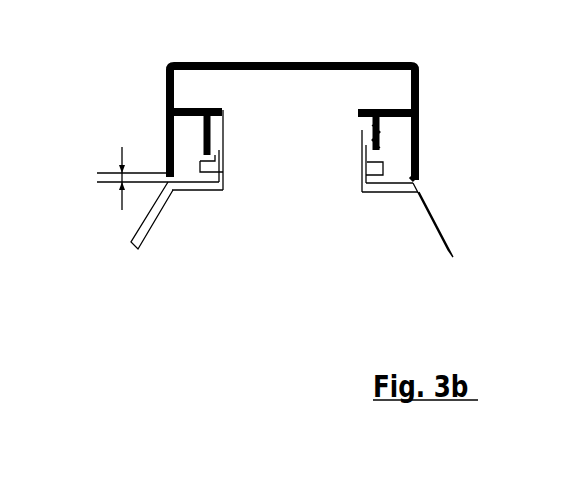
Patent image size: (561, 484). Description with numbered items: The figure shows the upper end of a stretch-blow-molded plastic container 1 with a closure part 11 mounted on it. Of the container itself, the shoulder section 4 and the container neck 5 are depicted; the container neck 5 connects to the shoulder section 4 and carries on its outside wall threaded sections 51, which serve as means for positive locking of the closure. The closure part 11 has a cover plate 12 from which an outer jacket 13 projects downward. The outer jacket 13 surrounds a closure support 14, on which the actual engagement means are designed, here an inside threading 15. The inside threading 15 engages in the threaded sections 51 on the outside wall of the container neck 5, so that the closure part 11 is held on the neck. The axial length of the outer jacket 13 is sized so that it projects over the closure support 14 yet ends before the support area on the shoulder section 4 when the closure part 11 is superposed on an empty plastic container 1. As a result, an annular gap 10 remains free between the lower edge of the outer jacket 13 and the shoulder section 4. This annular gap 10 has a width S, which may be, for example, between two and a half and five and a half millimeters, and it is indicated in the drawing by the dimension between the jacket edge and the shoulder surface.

The plastic container 1 is at (162, 296).
The shoulder section 4 is at (437, 220).
The container neck 5 is at (222, 150).
The annular gap 10 is at (418, 180).
The closure part 11 is at (152, 68).
The cover plate 12 is at (330, 64).
The outer jacket 13 is at (418, 138).
The closure support 14 is at (385, 138).
The inside threading 15 is at (365, 118).
The threaded sections 51 is at (210, 130).
The width of annular gap S is at (120, 177).